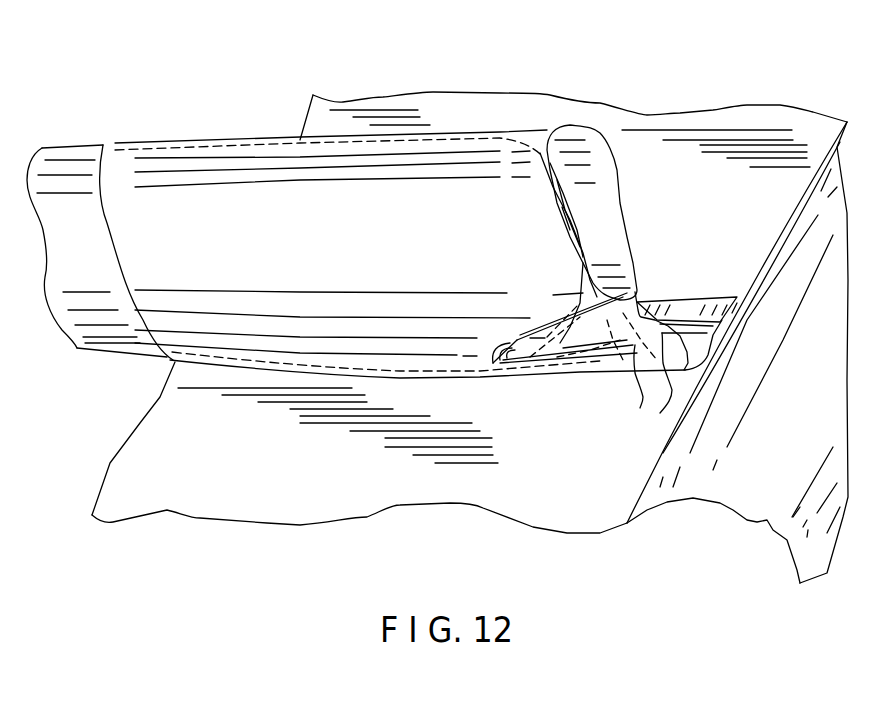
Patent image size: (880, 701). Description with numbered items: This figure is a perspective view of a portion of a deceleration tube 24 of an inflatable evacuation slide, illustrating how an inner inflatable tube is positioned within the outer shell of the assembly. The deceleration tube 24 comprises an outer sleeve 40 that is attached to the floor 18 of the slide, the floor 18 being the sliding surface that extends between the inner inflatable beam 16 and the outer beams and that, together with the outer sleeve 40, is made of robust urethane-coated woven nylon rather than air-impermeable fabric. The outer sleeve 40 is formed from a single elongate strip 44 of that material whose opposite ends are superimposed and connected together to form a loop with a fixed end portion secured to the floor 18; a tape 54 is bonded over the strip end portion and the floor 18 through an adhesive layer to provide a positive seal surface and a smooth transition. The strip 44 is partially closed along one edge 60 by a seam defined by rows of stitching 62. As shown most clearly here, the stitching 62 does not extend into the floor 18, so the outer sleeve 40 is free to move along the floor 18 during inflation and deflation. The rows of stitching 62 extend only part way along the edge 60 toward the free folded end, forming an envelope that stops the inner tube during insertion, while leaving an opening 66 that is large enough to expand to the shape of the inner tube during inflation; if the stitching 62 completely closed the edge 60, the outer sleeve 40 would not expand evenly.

The inner longitudinally extending inflatable beam 16 is at (748, 487).
The floor 18 is at (720, 117).
The deceleration tube 24 is at (230, 138).
The outer sleeve 40 is at (173, 213).
The strip 44 is at (263, 193).
The tape 54 is at (673, 308).
The edge 60 is at (622, 210).
The rows of stitching 62 is at (660, 413).
The opening 66 is at (600, 215).